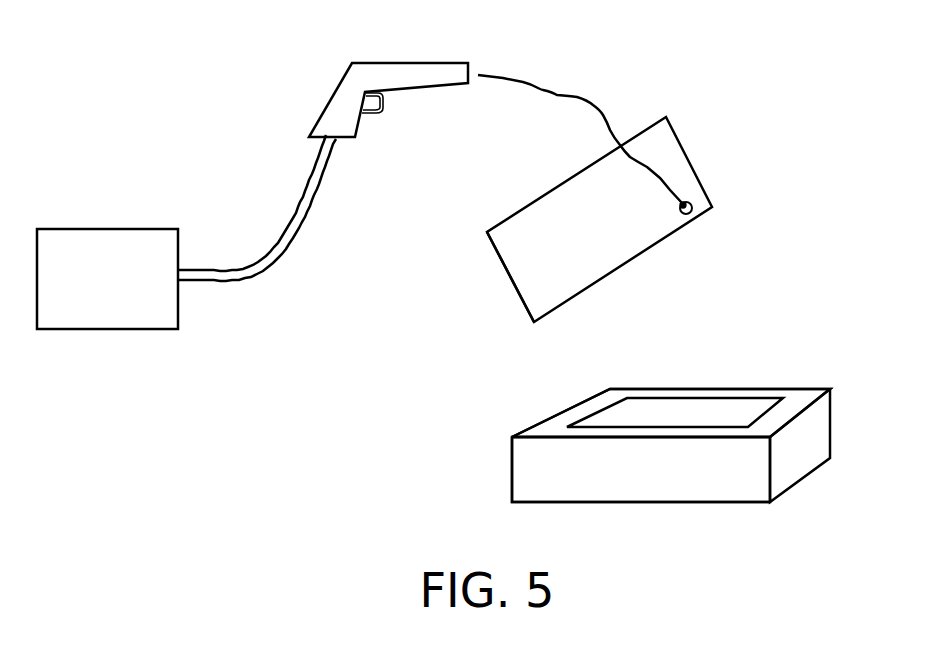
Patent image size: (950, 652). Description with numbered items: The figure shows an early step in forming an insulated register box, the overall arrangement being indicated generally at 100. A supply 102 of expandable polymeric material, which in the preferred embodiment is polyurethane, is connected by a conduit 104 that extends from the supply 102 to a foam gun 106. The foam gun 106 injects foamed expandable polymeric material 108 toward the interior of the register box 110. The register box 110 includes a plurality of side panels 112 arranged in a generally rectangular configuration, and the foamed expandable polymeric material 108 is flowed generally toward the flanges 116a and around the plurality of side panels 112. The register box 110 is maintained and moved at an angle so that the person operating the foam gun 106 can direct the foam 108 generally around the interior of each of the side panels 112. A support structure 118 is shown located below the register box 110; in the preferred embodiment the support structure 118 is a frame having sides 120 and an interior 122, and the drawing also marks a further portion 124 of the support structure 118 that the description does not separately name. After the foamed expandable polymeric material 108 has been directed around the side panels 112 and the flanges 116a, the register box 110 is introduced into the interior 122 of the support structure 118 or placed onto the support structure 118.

The system 100 is at (840, 203).
The supply 102 is at (103, 229).
The conduit 104 is at (265, 266).
The foam gun 106 is at (426, 82).
The foamed expandable polymeric material 108 is at (548, 90).
The register box 110 is at (694, 162).
The side panels 112 is at (510, 283).
The flanges 116a is at (706, 214).
The support structure 118 is at (812, 458).
The sides 120 is at (633, 492).
The interior 122 is at (702, 413).
The top surface 124 is at (797, 400).